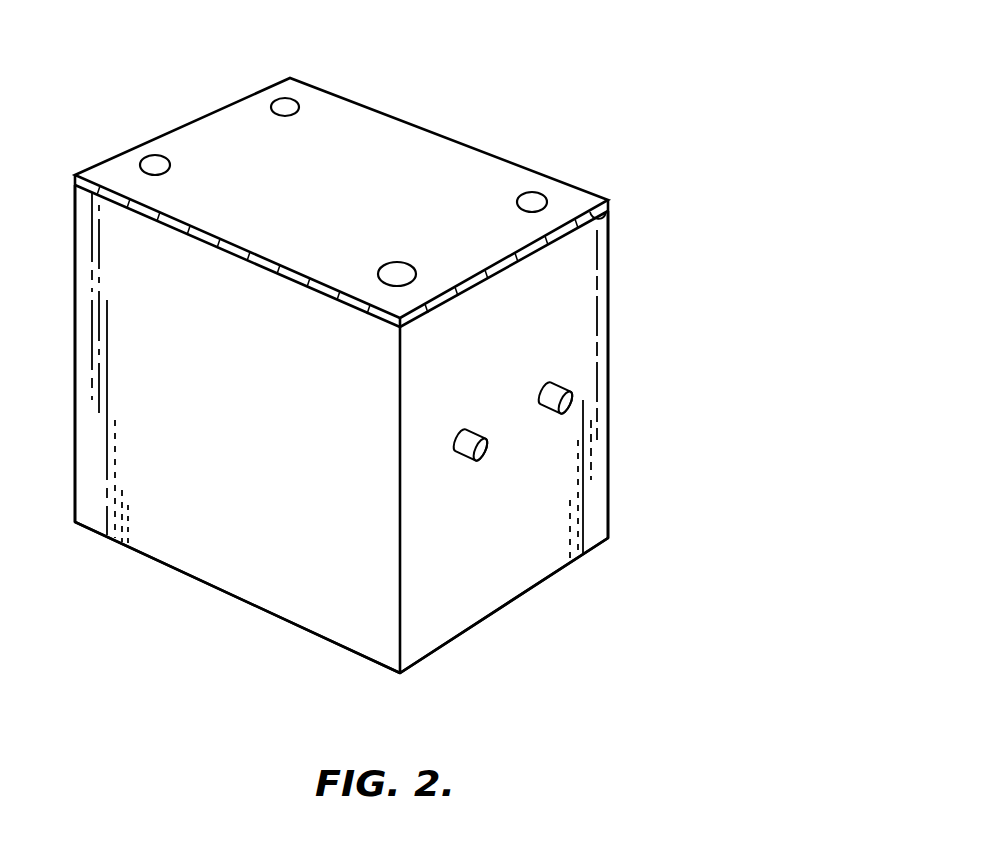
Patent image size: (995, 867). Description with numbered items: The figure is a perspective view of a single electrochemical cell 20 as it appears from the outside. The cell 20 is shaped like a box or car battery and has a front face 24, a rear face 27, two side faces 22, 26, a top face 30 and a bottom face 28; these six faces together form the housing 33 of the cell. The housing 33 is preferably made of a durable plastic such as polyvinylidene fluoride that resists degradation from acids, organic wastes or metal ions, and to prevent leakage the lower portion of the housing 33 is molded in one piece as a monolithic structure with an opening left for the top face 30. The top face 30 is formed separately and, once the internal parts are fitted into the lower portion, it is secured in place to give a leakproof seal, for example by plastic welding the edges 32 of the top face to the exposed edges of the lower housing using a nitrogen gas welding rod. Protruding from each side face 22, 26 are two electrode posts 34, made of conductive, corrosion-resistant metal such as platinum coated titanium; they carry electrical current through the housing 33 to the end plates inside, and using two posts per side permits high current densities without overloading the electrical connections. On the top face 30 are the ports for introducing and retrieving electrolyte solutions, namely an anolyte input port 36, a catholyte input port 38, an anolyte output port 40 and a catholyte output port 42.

The electrochemical cell 20 is at (535, 92).
The side face 22 is at (563, 498).
The front face 24 is at (95, 490).
The side face 26 is at (75, 345).
The rear face 27 is at (608, 305).
The bottom face 28 is at (487, 620).
The top face 30 is at (200, 132).
The edges of the top face 32 is at (607, 224).
The housing 33 is at (210, 565).
The electrode posts 34 is at (467, 462).
The anolyte input port 36 is at (142, 162).
The catholyte input port 38 is at (292, 98).
The anolyte output port 40 is at (412, 272).
The catholyte output port 42 is at (537, 193).